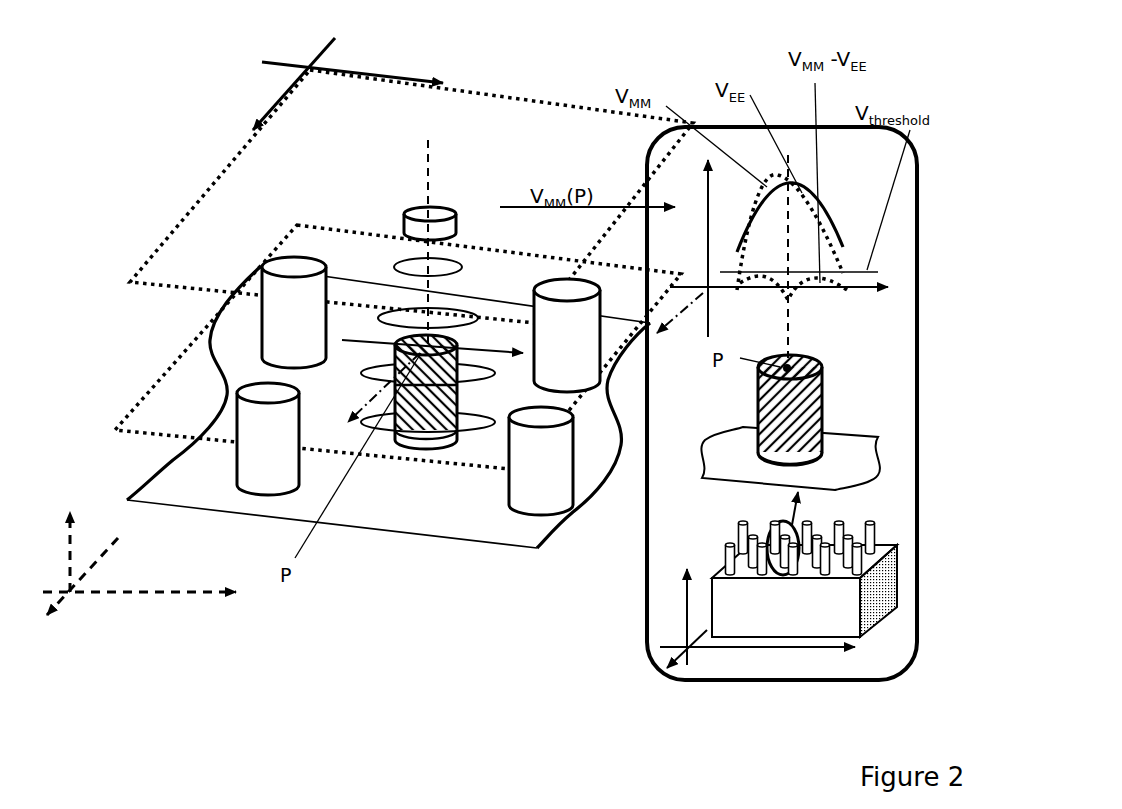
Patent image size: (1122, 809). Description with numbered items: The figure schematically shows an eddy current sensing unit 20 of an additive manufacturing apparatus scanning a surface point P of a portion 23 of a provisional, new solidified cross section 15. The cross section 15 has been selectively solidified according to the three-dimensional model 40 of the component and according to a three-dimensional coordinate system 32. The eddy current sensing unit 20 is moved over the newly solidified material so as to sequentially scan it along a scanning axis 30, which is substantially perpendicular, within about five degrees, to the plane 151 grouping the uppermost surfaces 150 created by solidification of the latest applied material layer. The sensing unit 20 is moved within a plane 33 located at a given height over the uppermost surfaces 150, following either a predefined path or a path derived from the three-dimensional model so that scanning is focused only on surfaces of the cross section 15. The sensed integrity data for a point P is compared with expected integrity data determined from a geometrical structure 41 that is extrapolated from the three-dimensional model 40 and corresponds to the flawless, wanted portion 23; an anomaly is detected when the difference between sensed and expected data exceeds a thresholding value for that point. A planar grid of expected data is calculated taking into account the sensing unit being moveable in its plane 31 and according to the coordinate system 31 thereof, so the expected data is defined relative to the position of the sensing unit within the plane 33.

The new solidified cross section 15 is at (260, 505).
The eddy current sensing unit 20 is at (402, 226).
The portion of the component 23 is at (417, 438).
The scanning axis 30 is at (428, 155).
The plane and coordinate system of the sensing unit 31 is at (310, 70).
The 3D coordinate system 32 is at (190, 593).
The plane 33 is at (174, 230).
The 3D model 40 is at (740, 617).
The geometrical structure 41 is at (773, 543).
The uppermost surfaces 150 is at (267, 393).
The plane grouping the uppermost surfaces 151 is at (137, 403).